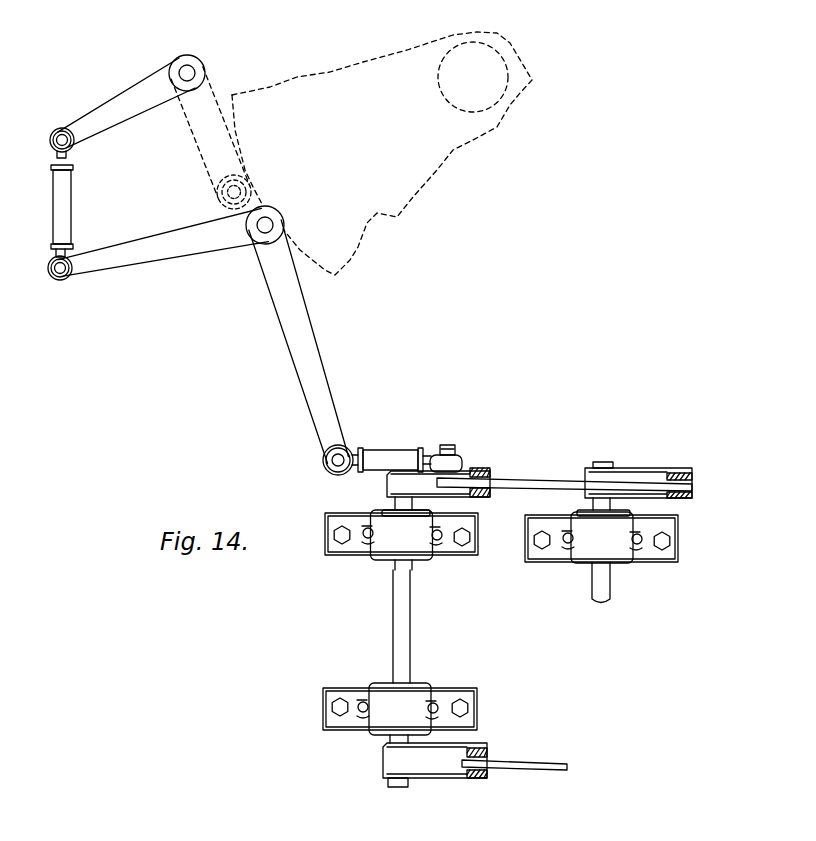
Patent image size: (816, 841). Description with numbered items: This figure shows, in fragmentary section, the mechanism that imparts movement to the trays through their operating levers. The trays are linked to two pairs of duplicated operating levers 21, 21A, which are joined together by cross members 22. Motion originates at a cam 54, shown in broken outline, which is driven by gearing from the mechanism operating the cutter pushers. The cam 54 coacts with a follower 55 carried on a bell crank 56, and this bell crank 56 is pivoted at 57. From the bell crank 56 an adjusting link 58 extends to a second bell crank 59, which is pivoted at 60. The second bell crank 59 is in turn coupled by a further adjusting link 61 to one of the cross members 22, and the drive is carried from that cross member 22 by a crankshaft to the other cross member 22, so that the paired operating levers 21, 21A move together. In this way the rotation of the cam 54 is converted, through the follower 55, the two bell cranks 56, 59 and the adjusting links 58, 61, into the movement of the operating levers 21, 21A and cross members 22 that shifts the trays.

The operating lever 21 is at (676, 470).
The operating lever 21A is at (484, 468).
The cross member 22 is at (533, 481).
The cam 54 is at (298, 88).
The follower 55 is at (217, 192).
The bell crank 56 is at (192, 118).
The pivot 57 is at (190, 70).
The adjusting link 58 is at (71, 206).
The second bell crank 59 is at (150, 260).
The pivot 60 is at (263, 227).
The adjusting link 61 is at (395, 453).